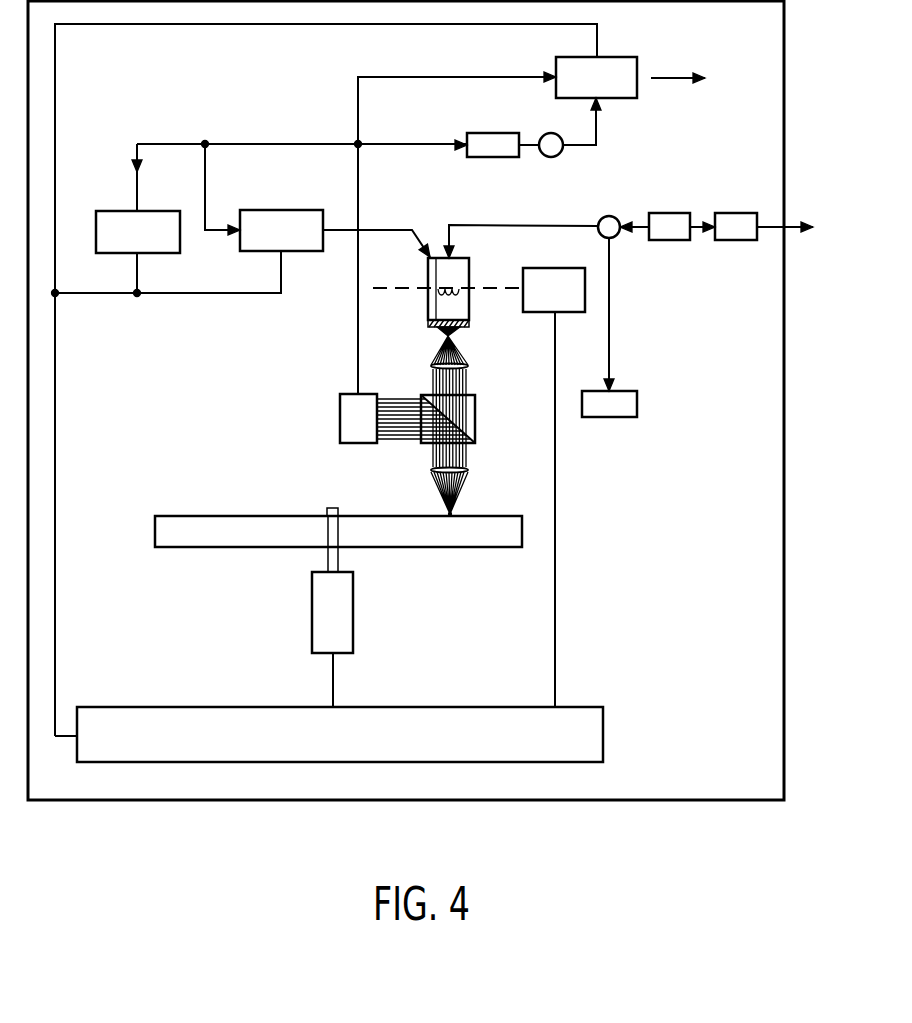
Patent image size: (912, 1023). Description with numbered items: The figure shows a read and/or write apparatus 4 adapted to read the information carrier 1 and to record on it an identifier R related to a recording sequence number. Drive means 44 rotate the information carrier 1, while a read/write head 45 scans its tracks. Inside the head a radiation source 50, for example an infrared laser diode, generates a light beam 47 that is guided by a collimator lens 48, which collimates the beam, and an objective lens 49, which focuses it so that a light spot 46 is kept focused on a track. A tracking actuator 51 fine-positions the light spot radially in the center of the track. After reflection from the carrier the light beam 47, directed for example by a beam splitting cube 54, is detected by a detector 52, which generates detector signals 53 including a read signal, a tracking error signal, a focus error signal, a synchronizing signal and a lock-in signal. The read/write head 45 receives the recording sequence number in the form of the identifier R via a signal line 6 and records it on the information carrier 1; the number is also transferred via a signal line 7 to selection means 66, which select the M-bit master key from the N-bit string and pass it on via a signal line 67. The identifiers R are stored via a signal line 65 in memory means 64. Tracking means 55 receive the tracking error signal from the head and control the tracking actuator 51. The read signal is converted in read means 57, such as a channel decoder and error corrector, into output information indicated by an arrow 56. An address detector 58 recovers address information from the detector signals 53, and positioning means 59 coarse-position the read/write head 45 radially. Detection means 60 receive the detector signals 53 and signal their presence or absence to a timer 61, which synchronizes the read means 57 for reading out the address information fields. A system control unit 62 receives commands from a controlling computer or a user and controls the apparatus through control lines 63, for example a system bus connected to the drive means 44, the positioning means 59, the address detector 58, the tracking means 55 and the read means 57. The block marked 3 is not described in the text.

The information carrier 1 is at (218, 548).
The computing unit 3 is at (668, 212).
The read and/or write apparatus 4 is at (676, 805).
The signal line 6 is at (460, 224).
The signal line 7 is at (698, 242).
The identifier R is at (609, 214).
The drive means 44 is at (354, 627).
The read/write head 45 is at (470, 271).
The light spot 46 is at (456, 512).
The light beam 47 is at (469, 361).
The collimator lens 48 is at (432, 364).
The objective lens 49 is at (431, 470).
The radiation source 50 is at (470, 325).
The tracking actuator 51 is at (428, 297).
The detector 52 is at (340, 420).
The detector signals 53 is at (359, 172).
The beam splitting cube 54 is at (476, 413).
The tracking means 55 is at (305, 252).
The output information 56 is at (668, 79).
The read means 57 is at (620, 100).
The address detector 58 is at (112, 210).
The positioning means 59 is at (553, 268).
The detection means 60 is at (494, 158).
The timer 61 is at (551, 158).
The system control unit 62 is at (511, 717).
The control lines 63 is at (56, 76).
The memory means 64 is at (638, 405).
The signal line 65 is at (612, 320).
The selection means 66 is at (734, 212).
The signal line 67 is at (765, 242).